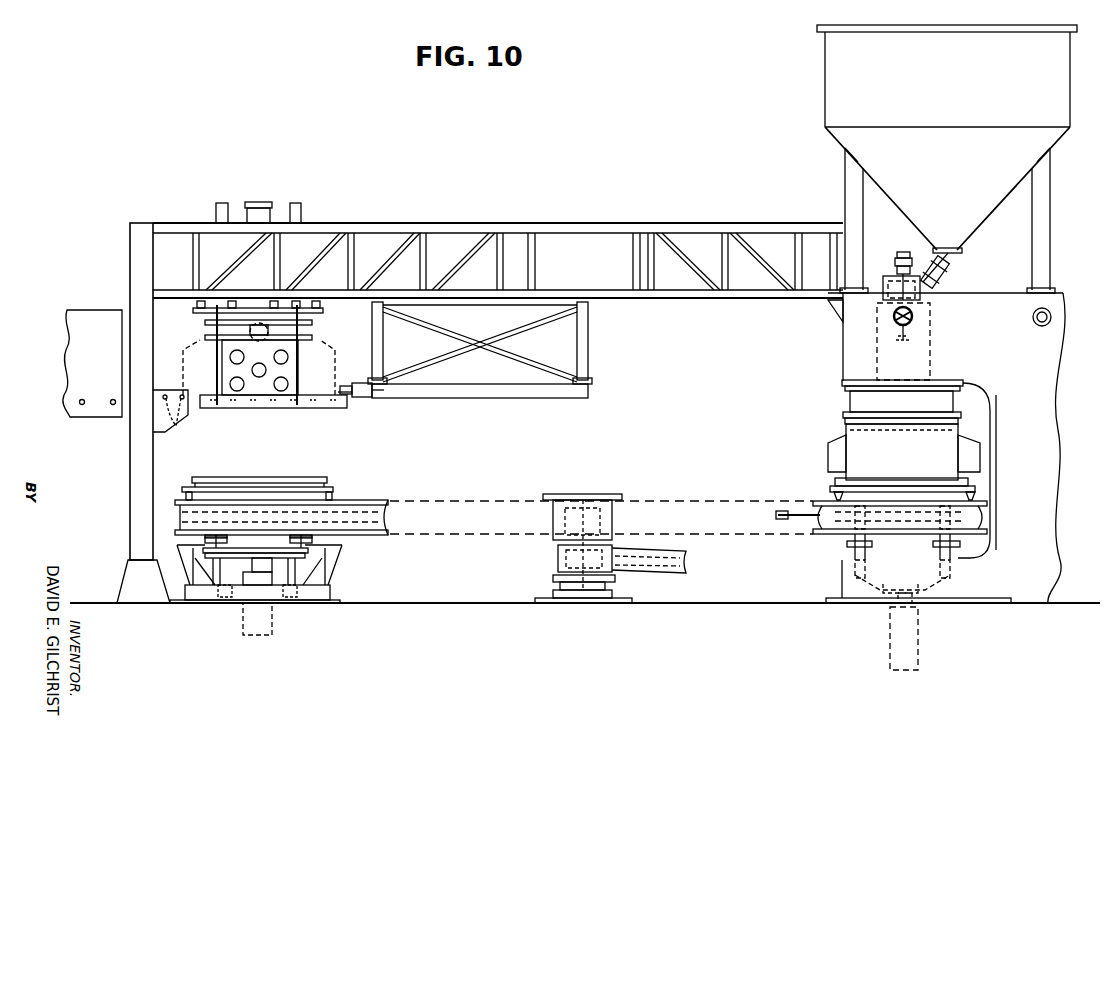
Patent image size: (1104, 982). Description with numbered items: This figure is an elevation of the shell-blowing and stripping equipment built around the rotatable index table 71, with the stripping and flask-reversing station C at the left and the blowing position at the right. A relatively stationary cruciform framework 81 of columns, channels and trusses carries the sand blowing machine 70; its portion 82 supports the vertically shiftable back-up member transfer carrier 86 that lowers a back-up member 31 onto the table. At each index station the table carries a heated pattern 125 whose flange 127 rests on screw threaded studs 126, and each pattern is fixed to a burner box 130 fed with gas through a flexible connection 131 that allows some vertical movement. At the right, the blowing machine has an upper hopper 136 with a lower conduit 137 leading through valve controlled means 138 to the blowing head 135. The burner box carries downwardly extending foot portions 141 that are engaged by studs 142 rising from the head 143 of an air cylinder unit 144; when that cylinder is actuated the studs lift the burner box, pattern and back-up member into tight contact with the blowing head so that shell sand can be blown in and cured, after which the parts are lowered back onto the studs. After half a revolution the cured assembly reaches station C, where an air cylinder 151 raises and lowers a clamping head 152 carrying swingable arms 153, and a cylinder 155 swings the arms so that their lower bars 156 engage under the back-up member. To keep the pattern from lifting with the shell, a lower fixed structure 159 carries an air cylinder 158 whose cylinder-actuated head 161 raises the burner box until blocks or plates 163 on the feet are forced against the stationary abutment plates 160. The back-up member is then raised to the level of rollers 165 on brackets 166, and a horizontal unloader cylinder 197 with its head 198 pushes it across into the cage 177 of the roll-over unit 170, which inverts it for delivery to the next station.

The shell-stripping and flask-reversing station C is at (93, 150).
The sand blowing machine 70 is at (914, 159).
The framework portion 82 is at (183, 221).
The framework 81 is at (530, 212).
The air cylinder 151 is at (258, 212).
The upper hopper 136 is at (988, 202).
The lower conduit 137 is at (930, 285).
The valve controlled means 138 is at (933, 318).
The roll-over unit 170 is at (60, 313).
The cage 177 is at (70, 380).
The back-up member transfer carrier 86 is at (180, 366).
The cylinder 155 is at (205, 331).
The back-up member clamping head 152 is at (314, 336).
The back-up member 31 is at (968, 432).
The blowing head 135 is at (848, 404).
The head 198 is at (364, 398).
The horizontal unloader cylinder 197 is at (480, 392).
The brackets 166 is at (156, 419).
The rollers 165 is at (172, 422).
The swingable arms 153 is at (254, 406).
The lower bars 156 is at (308, 408).
The rotatable table 71 is at (362, 500).
The flange 127 is at (893, 482).
The pattern 125 is at (824, 483).
The screw threaded studs 126 is at (832, 495).
The abutment plates 160 is at (208, 537).
The foot portions 141 is at (868, 541).
The flexible connection 131 is at (778, 515).
The blocks or plates 163 is at (230, 550).
The burner box 130 is at (838, 527).
The lower fixed structure 159 is at (340, 572).
The studs 142 is at (850, 548).
The cylinder-actuated head 161 is at (213, 562).
The air cylinder 158 is at (274, 628).
The head 143 is at (935, 585).
The air cylinder unit 144 is at (888, 647).